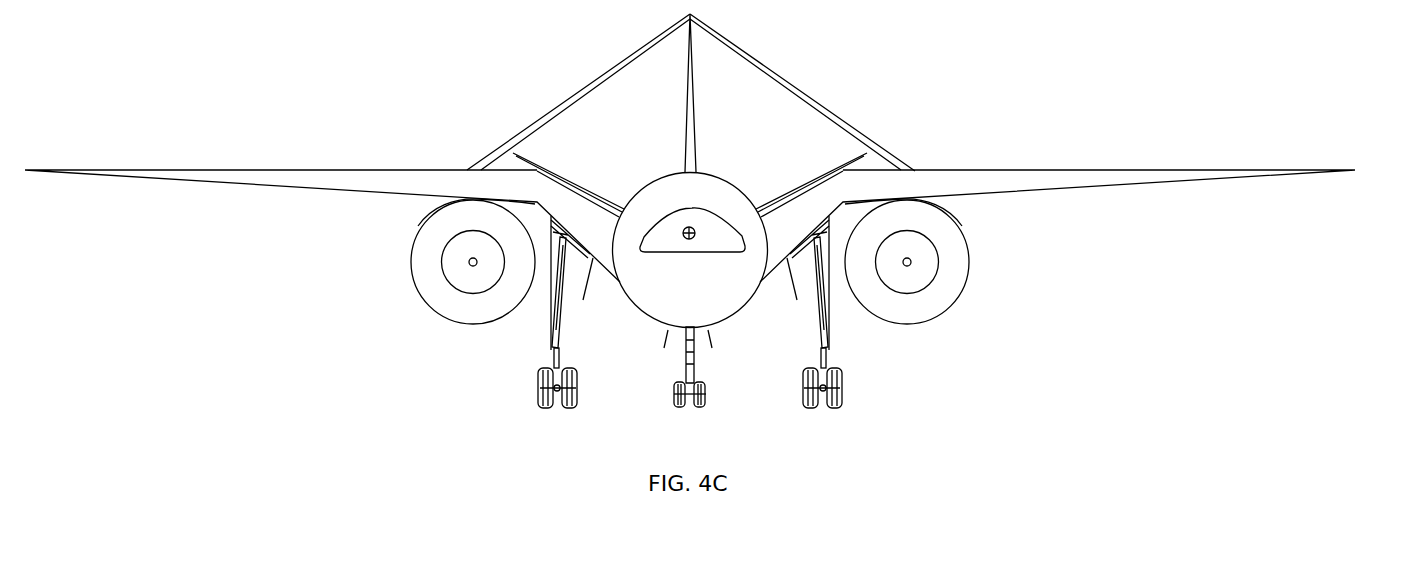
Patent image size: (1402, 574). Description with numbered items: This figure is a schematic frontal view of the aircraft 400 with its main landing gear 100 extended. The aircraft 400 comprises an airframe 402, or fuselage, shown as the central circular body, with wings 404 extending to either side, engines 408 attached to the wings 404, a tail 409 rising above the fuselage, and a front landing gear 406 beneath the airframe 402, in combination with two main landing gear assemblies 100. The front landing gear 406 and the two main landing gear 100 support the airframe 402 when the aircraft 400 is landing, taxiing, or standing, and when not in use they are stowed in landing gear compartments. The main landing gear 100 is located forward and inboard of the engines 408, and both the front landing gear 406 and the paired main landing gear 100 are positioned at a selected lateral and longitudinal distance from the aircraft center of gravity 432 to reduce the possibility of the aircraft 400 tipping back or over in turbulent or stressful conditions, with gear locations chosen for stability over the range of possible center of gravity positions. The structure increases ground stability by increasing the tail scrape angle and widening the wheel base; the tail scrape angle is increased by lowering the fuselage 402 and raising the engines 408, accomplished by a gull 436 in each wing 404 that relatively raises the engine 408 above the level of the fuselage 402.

The aircraft 400 is at (446, 97).
The airframe 402 is at (643, 186).
The wings 404 is at (285, 186).
The front landing gear 406 is at (685, 368).
The engines 408 is at (411, 256).
The tail 409 is at (678, 23).
The aircraft center of gravity 432 is at (691, 229).
The gull 436 is at (535, 193).
The main landing gear 100 is at (548, 326).